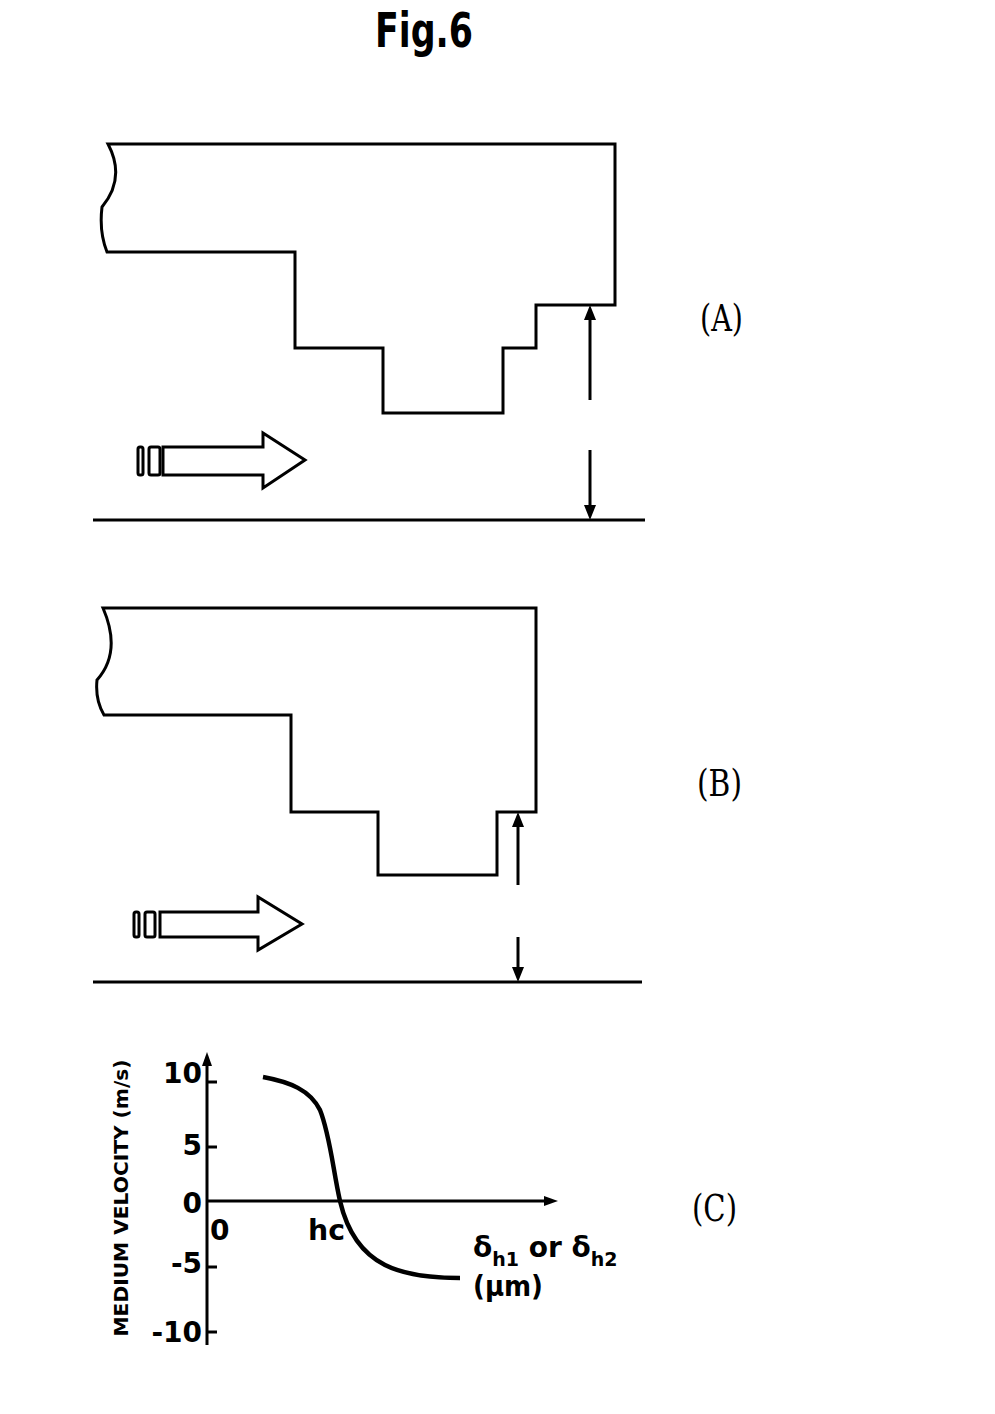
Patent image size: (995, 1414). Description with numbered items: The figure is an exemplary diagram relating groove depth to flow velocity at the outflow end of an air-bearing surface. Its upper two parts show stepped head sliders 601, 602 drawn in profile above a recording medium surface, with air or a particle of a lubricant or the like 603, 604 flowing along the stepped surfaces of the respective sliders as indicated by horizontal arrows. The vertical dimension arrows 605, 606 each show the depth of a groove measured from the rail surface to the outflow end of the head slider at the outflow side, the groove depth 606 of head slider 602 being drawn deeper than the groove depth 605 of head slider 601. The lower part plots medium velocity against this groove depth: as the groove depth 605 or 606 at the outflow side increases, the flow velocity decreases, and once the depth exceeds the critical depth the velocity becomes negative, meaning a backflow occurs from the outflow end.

The head slider 601 is at (490, 254).
The head slider 602 is at (423, 708).
The air or particle of a lubricant 603 is at (221, 438).
The air or particle of a lubricant 604 is at (218, 900).
The groove depth 605 is at (369, 412).
The groove depth 606 is at (367, 897).